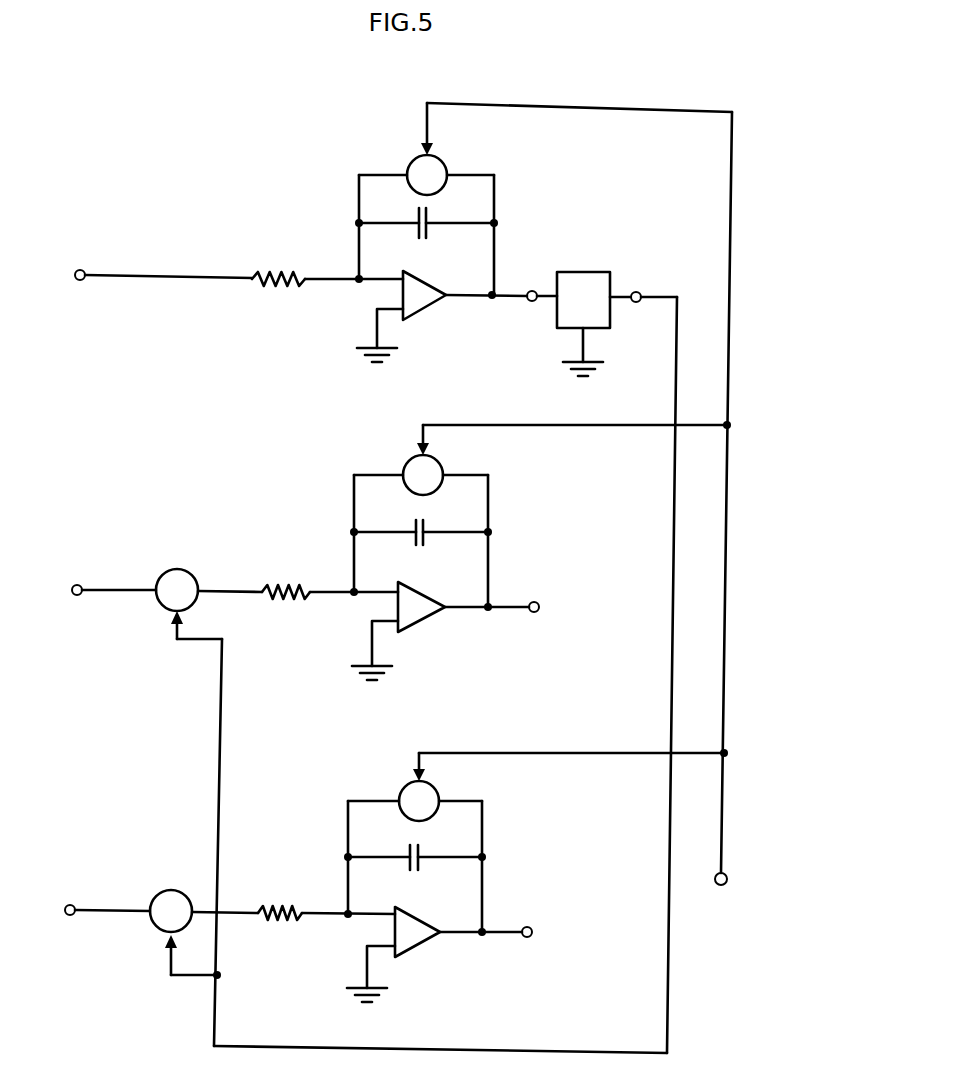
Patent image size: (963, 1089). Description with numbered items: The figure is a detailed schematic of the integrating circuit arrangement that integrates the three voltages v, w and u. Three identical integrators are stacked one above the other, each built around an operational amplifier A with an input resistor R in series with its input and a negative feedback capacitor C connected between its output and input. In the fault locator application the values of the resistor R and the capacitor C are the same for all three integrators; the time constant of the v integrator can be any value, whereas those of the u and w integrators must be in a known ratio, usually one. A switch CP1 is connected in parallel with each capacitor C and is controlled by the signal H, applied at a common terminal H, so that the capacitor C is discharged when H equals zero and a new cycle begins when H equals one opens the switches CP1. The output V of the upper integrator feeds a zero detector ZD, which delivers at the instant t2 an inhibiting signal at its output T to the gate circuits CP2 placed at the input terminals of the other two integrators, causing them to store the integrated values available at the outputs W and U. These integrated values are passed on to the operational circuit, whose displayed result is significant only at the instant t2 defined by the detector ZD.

The switch CP1 is at (423, 488).
The gate circuit CP2 is at (174, 750).
The input resistor R is at (277, 272).
The negative feedback capacitor C is at (418, 216).
The operational amplifier A is at (420, 614).
The zero detector ZD is at (583, 315).
The control signal H is at (575, 506).
The instant t2 output signal T is at (461, 665).
The integrated v output V is at (501, 286).
The integrated w output W is at (502, 607).
The integrated u output U is at (494, 932).
The input voltage v is at (155, 276).
The input voltage w is at (105, 591).
The input voltage u is at (99, 911).